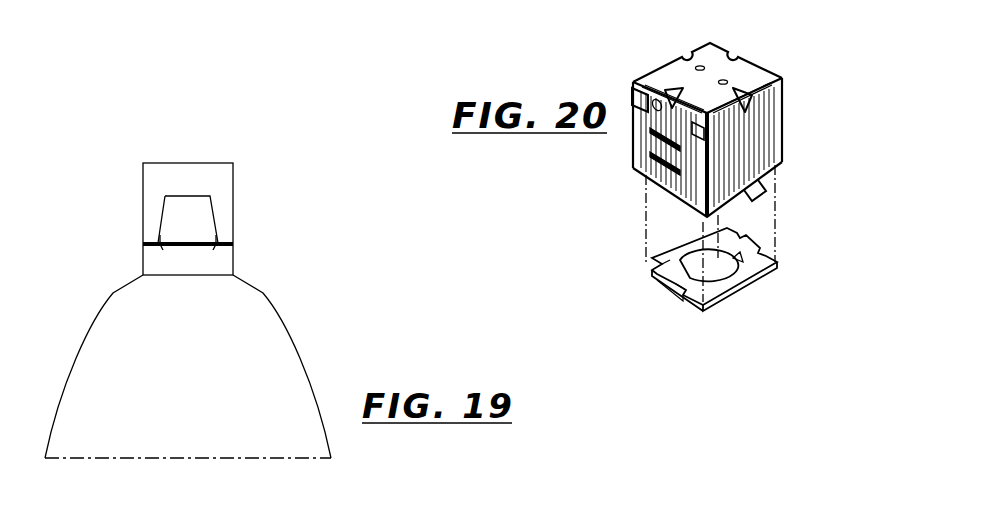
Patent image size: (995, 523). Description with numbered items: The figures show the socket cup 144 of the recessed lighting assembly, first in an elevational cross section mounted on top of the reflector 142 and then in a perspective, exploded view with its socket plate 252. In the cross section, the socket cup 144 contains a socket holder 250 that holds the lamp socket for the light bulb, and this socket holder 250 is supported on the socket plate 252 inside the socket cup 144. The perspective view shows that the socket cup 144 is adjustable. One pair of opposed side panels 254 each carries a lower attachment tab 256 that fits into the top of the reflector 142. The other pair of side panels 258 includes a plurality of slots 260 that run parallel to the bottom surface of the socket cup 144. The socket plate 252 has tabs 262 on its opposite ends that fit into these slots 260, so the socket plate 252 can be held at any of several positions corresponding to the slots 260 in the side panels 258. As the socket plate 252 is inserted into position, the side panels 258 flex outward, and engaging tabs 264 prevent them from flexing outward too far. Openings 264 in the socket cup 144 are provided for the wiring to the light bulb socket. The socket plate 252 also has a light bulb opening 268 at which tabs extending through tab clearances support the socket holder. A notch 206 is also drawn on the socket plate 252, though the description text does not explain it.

In FIG. 19, the reflector 142 is at (310, 358).
In FIG. 19, the socket cup 144 is at (193, 170).
In FIG. 20, the socket cup 144 is at (711, 122).
In FIG. 19, the notch 206 is at (285, 519).
In FIG. 20, the notch 206 is at (658, 263).
In FIG. 19, the socket holder 250 is at (207, 200).
In FIG. 19, the socket plate 252 is at (225, 247).
In FIG. 20, the socket plate 252 is at (709, 285).
In FIG. 20, the side panels 254 is at (763, 118).
In FIG. 20, the attachment tab 256 is at (763, 200).
In FIG. 20, the side panels 258 is at (642, 148).
In FIG. 20, the slots 260 is at (673, 172).
In FIG. 20, the tabs 262 is at (673, 305).
In FIG. 20, the engaging tabs / openings 264 is at (702, 66).
In FIG. 20, the light bulb opening 268 is at (723, 268).